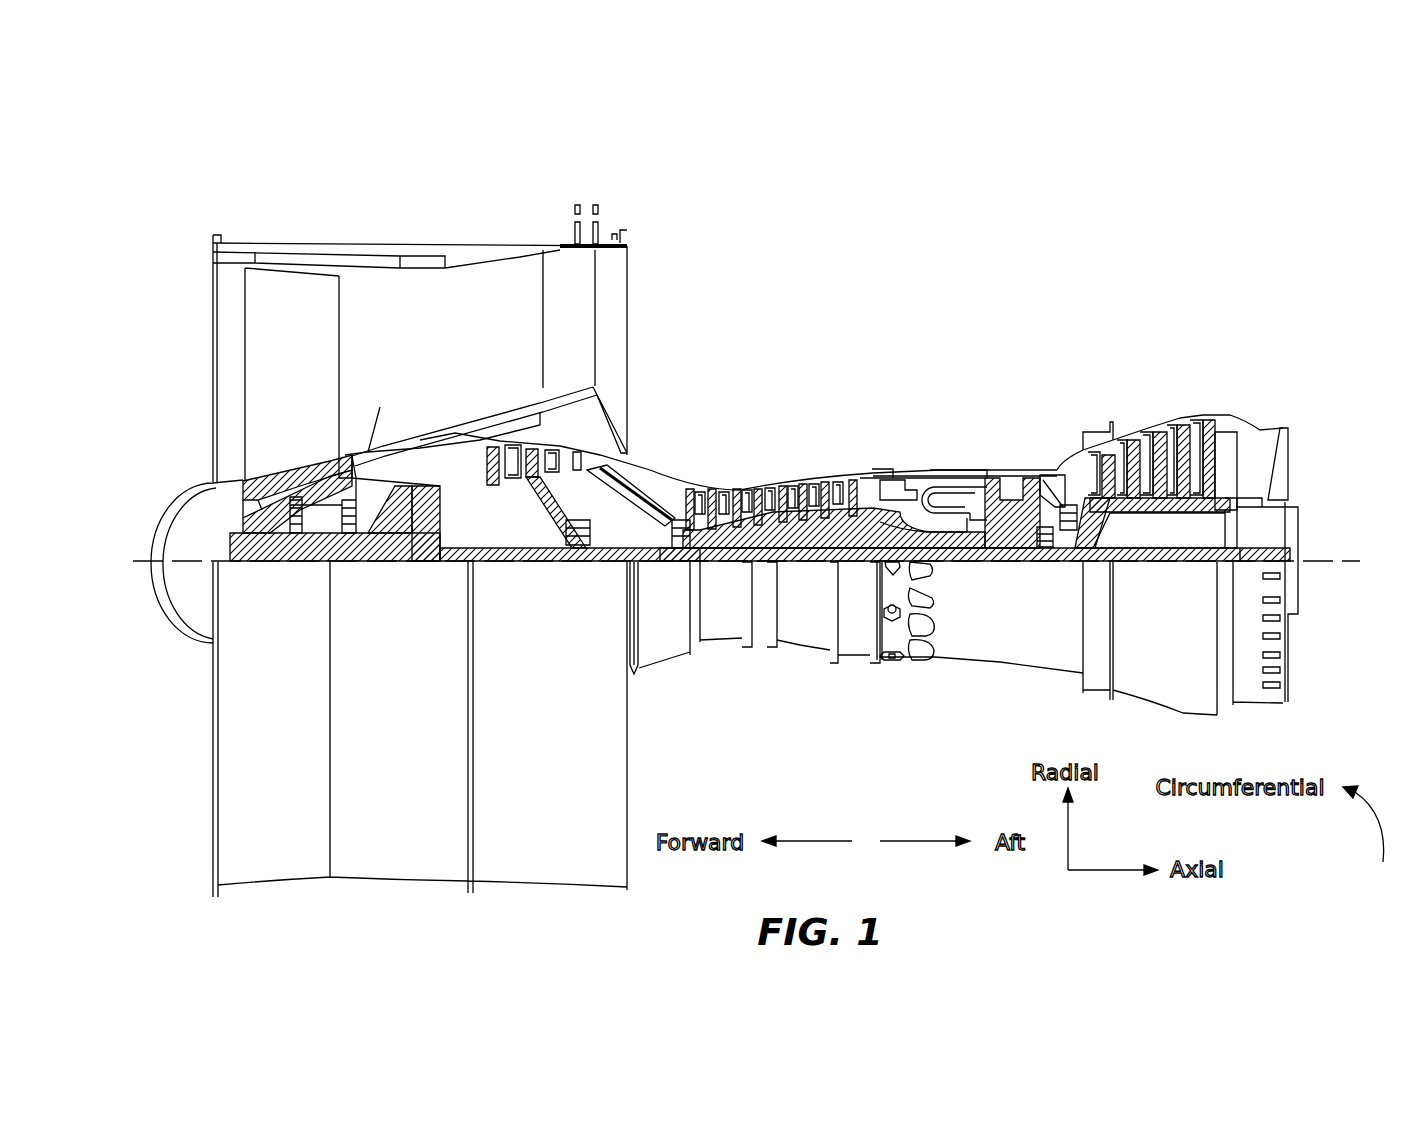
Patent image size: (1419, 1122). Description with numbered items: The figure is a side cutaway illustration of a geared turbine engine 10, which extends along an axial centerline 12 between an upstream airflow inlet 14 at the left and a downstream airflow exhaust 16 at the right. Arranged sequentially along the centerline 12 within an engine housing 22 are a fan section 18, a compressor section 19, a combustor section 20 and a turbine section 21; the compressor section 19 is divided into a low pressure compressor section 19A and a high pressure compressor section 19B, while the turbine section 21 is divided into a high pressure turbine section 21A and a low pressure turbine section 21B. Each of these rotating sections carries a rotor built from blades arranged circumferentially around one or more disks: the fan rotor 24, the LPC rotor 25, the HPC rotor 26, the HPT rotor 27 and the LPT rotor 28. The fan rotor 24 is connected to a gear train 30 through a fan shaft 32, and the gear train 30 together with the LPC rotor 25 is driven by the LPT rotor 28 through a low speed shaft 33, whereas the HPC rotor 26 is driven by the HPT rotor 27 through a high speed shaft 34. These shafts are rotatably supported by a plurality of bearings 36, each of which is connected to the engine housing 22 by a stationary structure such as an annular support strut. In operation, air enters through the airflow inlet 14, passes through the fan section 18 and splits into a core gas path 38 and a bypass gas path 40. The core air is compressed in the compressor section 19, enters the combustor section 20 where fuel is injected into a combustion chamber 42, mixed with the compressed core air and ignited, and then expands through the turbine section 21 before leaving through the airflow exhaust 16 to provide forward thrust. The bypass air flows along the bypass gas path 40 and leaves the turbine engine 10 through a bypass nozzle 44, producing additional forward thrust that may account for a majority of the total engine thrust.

The geared turbine engine 10 is at (182, 226).
The axial centerline 12 is at (1356, 566).
The upstream airflow inlet 14 is at (213, 318).
The downstream airflow exhaust 16 is at (1290, 450).
The fan section 18 is at (213, 222).
The compressor section 19 is at (460, 155).
The low pressure compressor section 19A is at (627, 200).
The high pressure compressor section 19B is at (850, 395).
The combustor section 20 is at (950, 448).
The turbine section 21 is at (985, 330).
The high pressure turbine section 21A is at (1047, 486).
The low pressure turbine section 21B is at (1220, 532).
The engine housing 22 is at (644, 672).
The fan rotor 24 is at (243, 480).
The LPC rotor 25 is at (540, 507).
The HPC rotor 26 is at (797, 517).
The HPT rotor 27 is at (1010, 540).
The LPT rotor 28 is at (1157, 505).
The gear train 30 is at (425, 562).
The fan shaft 32 is at (285, 562).
The low speed shaft 33 is at (855, 565).
The high speed shaft 34 is at (942, 535).
The bearings 36 is at (322, 536).
The core gas path 38 is at (648, 487).
The bypass gas path 40 is at (442, 335).
The combustion chamber 42 is at (933, 500).
The bypass nozzle 44 is at (627, 300).